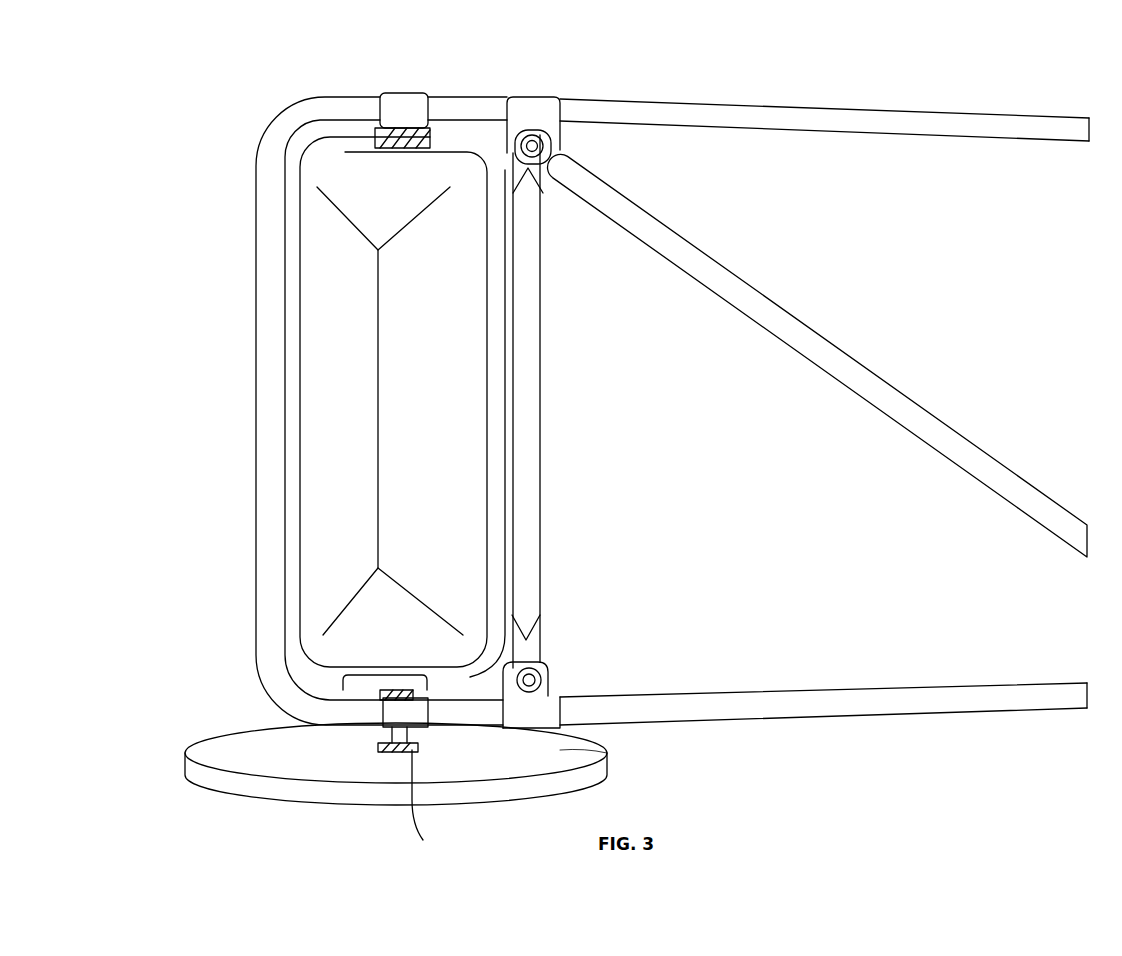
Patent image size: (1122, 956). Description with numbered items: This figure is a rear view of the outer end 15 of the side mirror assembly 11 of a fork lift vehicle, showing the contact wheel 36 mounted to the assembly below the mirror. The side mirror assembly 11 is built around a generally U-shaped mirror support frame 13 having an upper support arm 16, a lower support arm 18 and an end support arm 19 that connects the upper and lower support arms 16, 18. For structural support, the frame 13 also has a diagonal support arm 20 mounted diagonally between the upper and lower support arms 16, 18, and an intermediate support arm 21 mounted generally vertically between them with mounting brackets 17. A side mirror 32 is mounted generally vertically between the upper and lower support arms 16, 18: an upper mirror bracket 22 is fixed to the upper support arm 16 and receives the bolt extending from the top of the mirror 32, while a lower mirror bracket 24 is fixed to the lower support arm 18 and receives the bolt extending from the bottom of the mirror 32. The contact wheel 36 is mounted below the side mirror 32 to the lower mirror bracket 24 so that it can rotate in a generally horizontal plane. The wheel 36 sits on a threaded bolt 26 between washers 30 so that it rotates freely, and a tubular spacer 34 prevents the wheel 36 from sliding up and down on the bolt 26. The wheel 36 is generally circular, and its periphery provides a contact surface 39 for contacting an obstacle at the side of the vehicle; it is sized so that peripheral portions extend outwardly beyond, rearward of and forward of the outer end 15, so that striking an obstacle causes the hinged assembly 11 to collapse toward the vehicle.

The side mirror assembly 11 is at (714, 78).
The mirror support frame 13 is at (318, 96).
The outer end 15 is at (365, 72).
The upper support arm 16 is at (823, 118).
The mounting brackets 17 is at (548, 105).
The lower support arm 18 is at (818, 698).
The end support arm 19 is at (272, 370).
The diagonal support arm 20 is at (772, 315).
The intermediate support arm 21 is at (530, 355).
The upper mirror bracket 22 is at (403, 102).
The lower mirror bracket 24 is at (418, 713).
The threaded bolt 26 is at (377, 688).
The washers 30 is at (429, 809).
The side mirror 32 is at (327, 243).
The tubular spacer 34 is at (385, 742).
The contact wheel 36 is at (573, 750).
The contact surface 39 is at (200, 775).